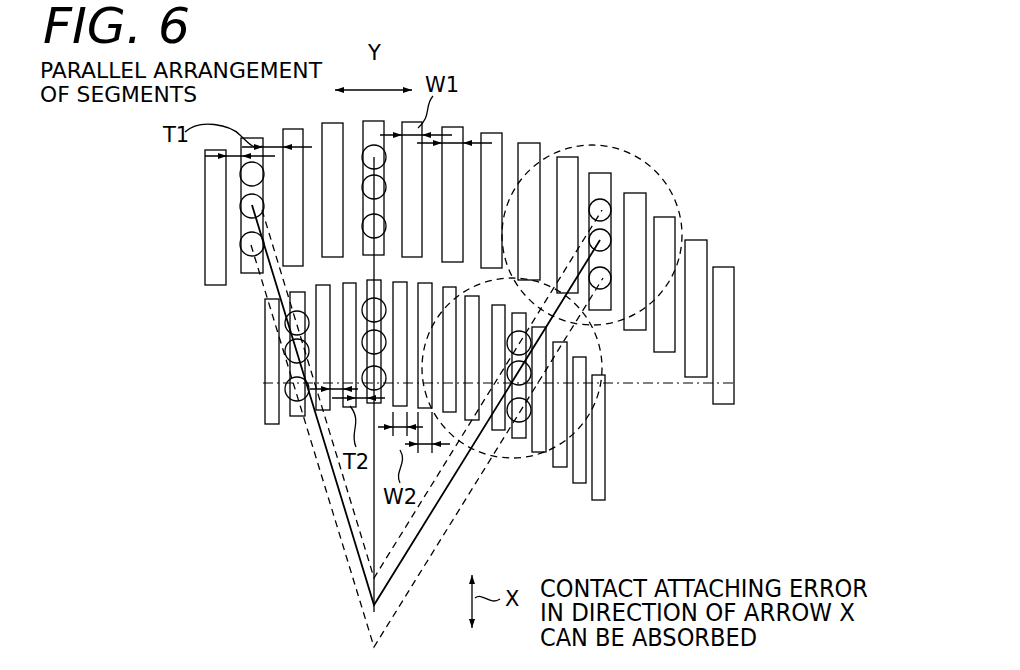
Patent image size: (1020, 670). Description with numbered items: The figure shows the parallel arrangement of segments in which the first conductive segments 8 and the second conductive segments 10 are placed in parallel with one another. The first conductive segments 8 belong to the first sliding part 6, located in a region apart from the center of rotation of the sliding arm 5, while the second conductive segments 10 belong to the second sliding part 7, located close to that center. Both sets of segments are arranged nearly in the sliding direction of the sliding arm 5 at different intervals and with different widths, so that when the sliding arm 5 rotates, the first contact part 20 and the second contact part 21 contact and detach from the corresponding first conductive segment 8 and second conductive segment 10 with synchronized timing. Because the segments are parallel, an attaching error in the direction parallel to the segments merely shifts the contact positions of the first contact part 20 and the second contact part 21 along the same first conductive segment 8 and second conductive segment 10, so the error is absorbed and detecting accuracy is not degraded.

The sliding arm 5 is at (415, 512).
The first sliding part 6 is at (193, 216).
The second sliding part 7 is at (248, 361).
The first conductive segment 8 is at (523, 142).
The second conductive segment 10 is at (558, 468).
The first contact part 20 is at (611, 278).
The second contact part 21 is at (531, 343).